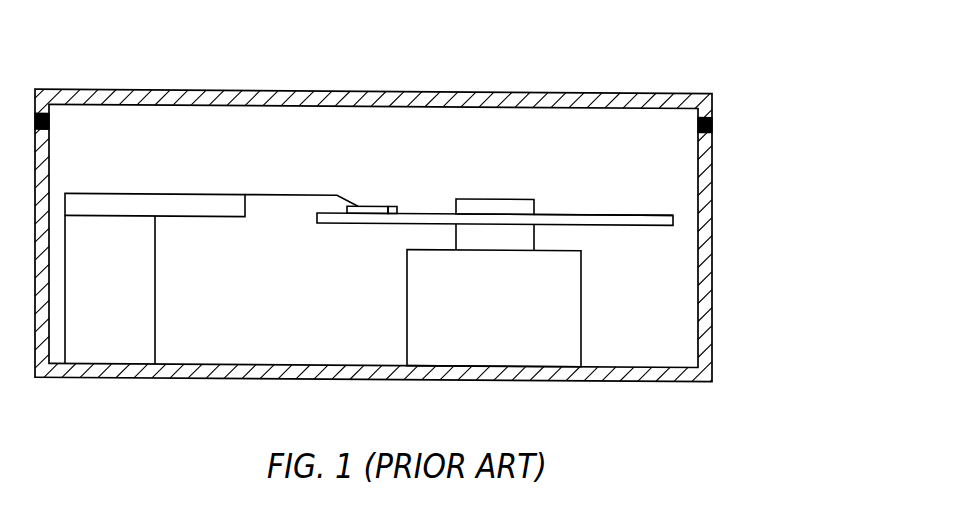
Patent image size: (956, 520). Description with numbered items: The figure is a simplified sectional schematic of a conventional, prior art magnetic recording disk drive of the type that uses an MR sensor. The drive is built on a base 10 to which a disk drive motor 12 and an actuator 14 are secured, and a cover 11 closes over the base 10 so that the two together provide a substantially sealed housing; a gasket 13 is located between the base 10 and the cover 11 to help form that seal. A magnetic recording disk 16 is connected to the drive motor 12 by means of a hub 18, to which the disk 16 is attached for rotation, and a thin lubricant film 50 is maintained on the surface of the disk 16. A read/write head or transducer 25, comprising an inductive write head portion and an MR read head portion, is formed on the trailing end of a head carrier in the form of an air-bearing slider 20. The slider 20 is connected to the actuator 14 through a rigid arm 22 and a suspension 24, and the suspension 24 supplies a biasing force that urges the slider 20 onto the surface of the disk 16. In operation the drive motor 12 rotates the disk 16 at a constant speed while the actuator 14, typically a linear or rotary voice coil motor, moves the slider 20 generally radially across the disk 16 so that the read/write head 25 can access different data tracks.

The base 10 is at (703, 316).
The cover 11 is at (47, 89).
The gasket 13 is at (713, 122).
The disk drive motor 12 is at (493, 352).
The actuator 14 is at (100, 352).
The magnetic recording disk 16 is at (675, 213).
The hub 18 is at (490, 199).
The air-bearing slider 20 is at (378, 206).
The rigid arm 22 is at (145, 194).
The suspension 24 is at (270, 195).
The read/write head or transducer 25 is at (397, 206).
The thin lubricant film 50 is at (643, 215).